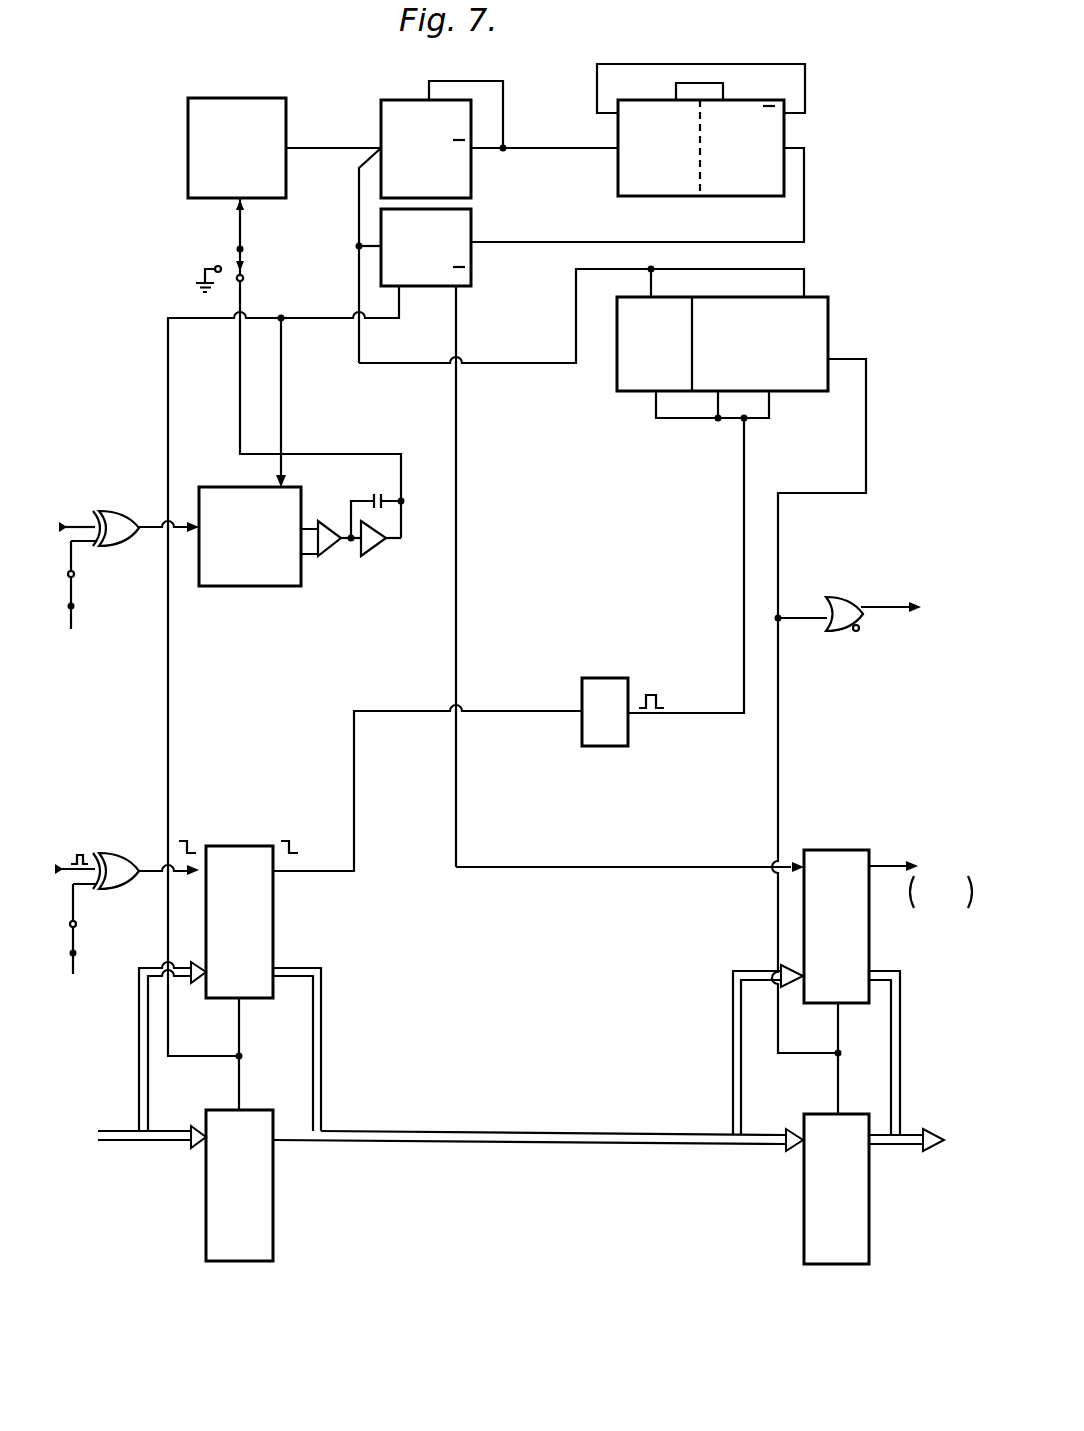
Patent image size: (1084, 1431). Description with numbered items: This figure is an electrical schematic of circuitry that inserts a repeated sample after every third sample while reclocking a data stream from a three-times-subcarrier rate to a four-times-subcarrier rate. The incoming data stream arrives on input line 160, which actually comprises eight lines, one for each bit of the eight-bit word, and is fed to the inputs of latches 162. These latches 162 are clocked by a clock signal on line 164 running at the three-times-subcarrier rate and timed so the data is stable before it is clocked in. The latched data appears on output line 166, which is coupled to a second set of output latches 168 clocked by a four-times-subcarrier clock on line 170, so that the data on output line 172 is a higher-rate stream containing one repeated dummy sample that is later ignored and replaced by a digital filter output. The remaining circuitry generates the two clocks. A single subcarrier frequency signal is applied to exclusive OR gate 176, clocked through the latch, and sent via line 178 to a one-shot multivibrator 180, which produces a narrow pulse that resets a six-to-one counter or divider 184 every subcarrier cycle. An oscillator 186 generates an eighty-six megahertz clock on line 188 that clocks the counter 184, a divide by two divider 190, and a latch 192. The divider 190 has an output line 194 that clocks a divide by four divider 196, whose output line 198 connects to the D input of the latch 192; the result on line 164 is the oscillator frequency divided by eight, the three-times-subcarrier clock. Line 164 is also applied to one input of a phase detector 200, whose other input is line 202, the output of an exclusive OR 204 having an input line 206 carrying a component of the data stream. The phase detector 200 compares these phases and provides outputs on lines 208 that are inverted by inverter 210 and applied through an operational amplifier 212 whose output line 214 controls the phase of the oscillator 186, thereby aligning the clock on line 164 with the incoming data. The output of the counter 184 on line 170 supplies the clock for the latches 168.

The input line 160 is at (147, 1141).
The latches 162 is at (272, 910).
The clock signal line 164 is at (380, 317).
The output line 166 is at (400, 1130).
The output latches 168 is at (868, 940).
The clock signal line 170 is at (865, 392).
The output line 172 is at (900, 1013).
The exclusive OR gate 176 is at (112, 852).
The line 178 is at (393, 710).
The one-shot multivibrator 180 is at (597, 677).
The 6-to-1 counter or divider 184 is at (633, 390).
The oscillator 186 is at (187, 158).
The line 188 is at (323, 148).
The divide by 2 divider 190 is at (472, 190).
The latch 192 is at (470, 278).
The output line 194 is at (557, 148).
The divide by 4 divider 196 is at (687, 195).
The output line 198 is at (805, 193).
The phase detector 200 is at (242, 587).
The line 202 is at (152, 533).
The exclusive OR 204 is at (137, 496).
The input line 206 is at (70, 538).
The output lines 208 is at (303, 556).
The inverter 210 is at (330, 520).
The operational amplifier 212 is at (368, 552).
The output line 214 is at (332, 453).